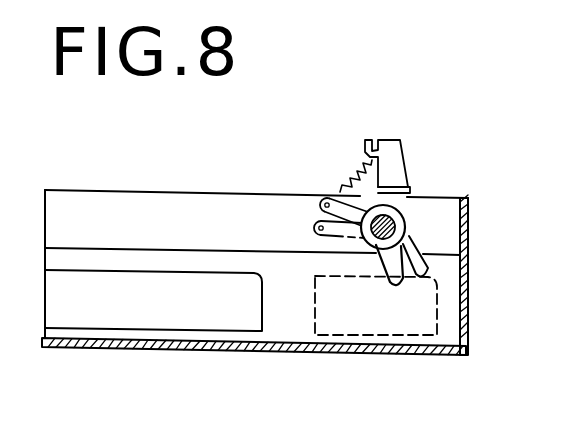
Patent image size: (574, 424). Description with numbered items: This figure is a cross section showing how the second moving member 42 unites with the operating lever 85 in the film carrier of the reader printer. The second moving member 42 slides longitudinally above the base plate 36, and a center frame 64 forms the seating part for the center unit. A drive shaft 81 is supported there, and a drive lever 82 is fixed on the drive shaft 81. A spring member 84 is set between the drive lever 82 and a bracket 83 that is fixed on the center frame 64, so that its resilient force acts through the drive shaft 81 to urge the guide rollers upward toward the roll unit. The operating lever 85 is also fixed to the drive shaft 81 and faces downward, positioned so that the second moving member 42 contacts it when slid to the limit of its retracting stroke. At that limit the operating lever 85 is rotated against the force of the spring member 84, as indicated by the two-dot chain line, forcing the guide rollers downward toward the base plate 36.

The base plate 36 is at (283, 351).
The second moving member 42 is at (147, 320).
The center frame 64 is at (117, 200).
The drive shaft 81 is at (405, 224).
The drive lever 82 is at (316, 225).
The bracket 83 is at (388, 152).
The spring member 84 is at (350, 176).
The operating lever 85 is at (428, 270).